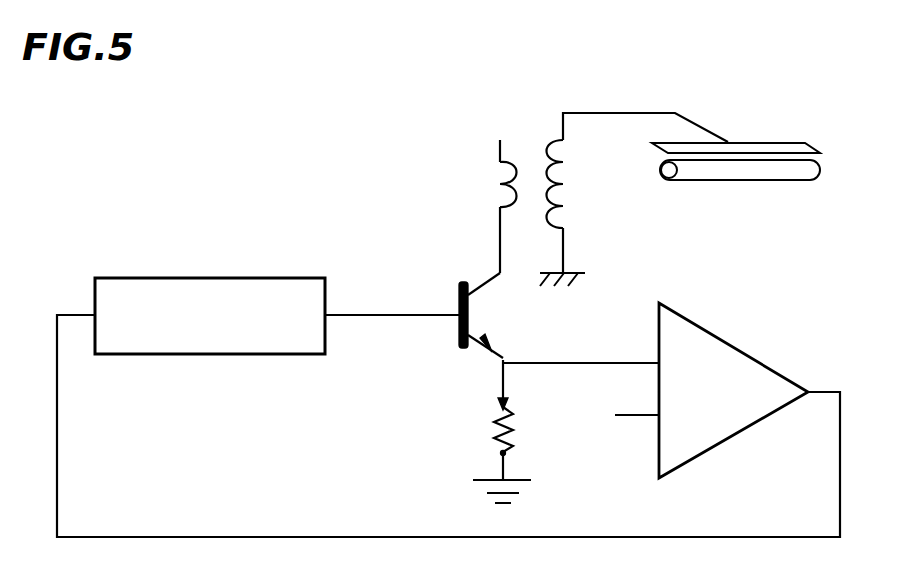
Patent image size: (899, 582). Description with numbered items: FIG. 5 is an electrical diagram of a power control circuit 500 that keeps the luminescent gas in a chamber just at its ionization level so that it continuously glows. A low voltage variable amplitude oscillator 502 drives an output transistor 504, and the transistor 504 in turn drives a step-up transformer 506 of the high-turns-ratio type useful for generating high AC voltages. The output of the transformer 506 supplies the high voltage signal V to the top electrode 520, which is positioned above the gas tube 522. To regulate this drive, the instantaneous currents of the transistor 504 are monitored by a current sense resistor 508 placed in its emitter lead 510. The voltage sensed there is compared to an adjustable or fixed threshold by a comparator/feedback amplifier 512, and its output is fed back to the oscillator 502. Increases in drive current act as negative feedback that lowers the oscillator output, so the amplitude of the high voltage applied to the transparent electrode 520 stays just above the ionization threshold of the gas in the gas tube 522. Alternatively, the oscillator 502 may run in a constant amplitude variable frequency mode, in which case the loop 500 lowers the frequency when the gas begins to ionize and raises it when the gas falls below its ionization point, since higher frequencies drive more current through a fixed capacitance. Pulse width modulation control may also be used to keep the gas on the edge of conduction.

The power control circuit 500 is at (230, 146).
The variable amplitude oscillator 502 is at (208, 278).
The output transistor 504 is at (460, 282).
The step-up transformer 506 is at (530, 150).
The current sense resistor 508 is at (496, 420).
The emitter lead 510 is at (506, 354).
The comparator/feedback amplifier 512 is at (748, 348).
The top electrode 520 is at (752, 147).
The gas tube 522 is at (745, 181).